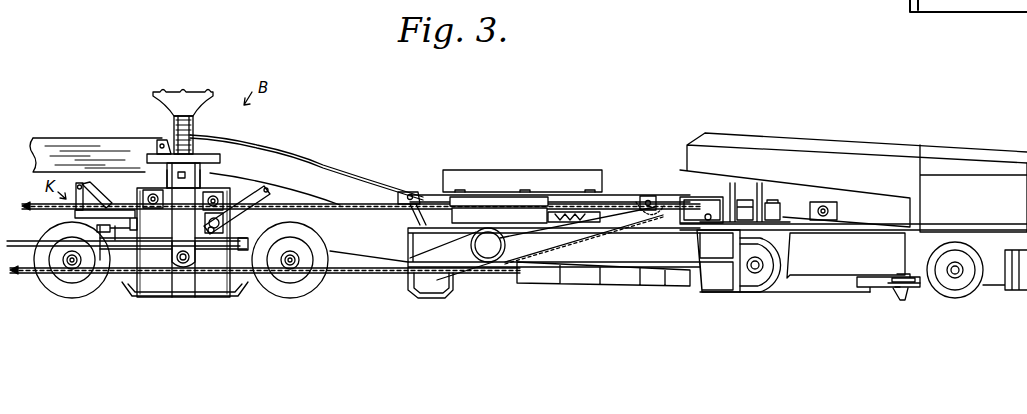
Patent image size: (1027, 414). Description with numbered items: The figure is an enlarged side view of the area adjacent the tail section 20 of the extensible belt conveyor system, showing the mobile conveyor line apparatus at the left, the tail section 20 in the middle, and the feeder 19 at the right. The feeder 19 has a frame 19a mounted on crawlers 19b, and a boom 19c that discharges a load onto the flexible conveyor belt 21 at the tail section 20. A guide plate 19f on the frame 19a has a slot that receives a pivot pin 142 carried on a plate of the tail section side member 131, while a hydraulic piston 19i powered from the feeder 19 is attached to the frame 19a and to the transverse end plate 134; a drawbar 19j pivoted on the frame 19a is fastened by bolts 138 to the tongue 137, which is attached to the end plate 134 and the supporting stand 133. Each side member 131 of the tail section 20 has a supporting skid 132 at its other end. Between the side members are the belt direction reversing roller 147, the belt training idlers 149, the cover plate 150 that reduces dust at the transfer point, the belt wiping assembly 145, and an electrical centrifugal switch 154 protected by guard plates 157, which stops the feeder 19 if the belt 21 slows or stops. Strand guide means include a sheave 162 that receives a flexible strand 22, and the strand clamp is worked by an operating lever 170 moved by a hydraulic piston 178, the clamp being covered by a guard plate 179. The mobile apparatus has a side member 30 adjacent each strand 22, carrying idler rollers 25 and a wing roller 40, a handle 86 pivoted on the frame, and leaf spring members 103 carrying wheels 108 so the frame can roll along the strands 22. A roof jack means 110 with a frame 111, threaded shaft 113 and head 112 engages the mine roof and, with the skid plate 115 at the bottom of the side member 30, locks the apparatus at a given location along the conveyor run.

The feeder 19 is at (922, 109).
The frame 19a is at (970, 190).
The crawlers 19b is at (968, 294).
The boom 19c is at (790, 140).
The guide plate 19f is at (746, 200).
The hydraulic piston 19i is at (812, 203).
The drawbar 19j is at (903, 274).
The tail section 20 is at (547, 122).
The flexible conveyor belt 21 is at (70, 139).
The flexible strands 22 is at (30, 210).
The carrying idler rollers 25 is at (100, 195).
The side member 30 is at (158, 286).
The wing roller 40 is at (147, 160).
The handle portion 86 is at (270, 195).
The flat spring members 103 is at (166, 250).
The wheels 108 is at (70, 293).
The roof jack means 110 is at (240, 132).
The frame 111 is at (178, 220).
The head 112 is at (183, 91).
The threaded shaft portion 113 is at (196, 125).
The skid plate 115 is at (186, 297).
The side member 131 is at (612, 195).
The supporting skid 132 is at (430, 298).
The supporting stand 133 is at (722, 292).
The transverse end plate 134 is at (800, 226).
The tongue 137 is at (858, 290).
The bolts 138 is at (900, 302).
The pivot pin 142 is at (762, 200).
The belt wiping assembly 145 is at (650, 276).
The belt direction reversing roller 147 is at (760, 292).
The belt training idlers 149 is at (398, 192).
The cover plate 150 is at (543, 176).
The electrical centrifugal switch 154 is at (492, 246).
The guard plates 157 is at (452, 286).
The sheave 162 is at (648, 196).
The operating lever 170 is at (540, 212).
The hydraulic piston 178 is at (593, 225).
The guard plate 179 is at (480, 205).